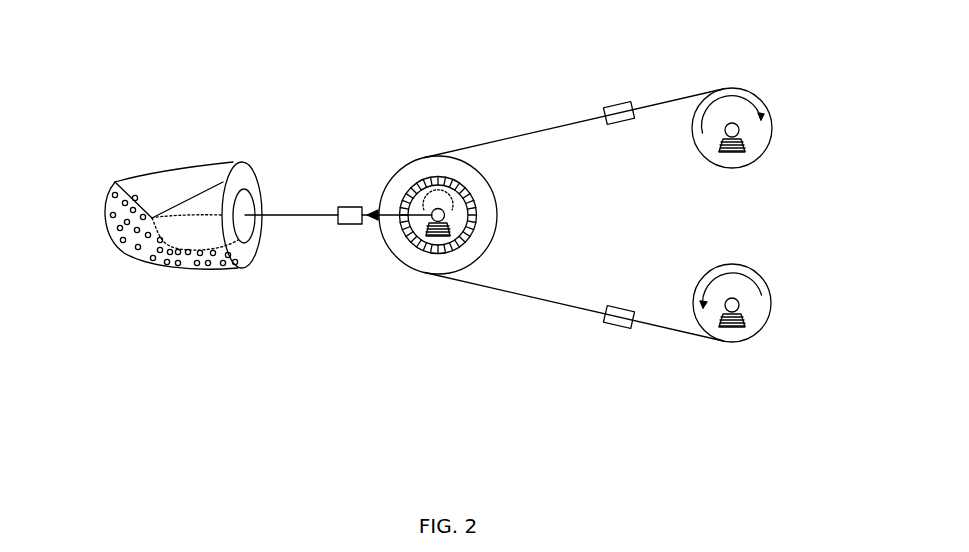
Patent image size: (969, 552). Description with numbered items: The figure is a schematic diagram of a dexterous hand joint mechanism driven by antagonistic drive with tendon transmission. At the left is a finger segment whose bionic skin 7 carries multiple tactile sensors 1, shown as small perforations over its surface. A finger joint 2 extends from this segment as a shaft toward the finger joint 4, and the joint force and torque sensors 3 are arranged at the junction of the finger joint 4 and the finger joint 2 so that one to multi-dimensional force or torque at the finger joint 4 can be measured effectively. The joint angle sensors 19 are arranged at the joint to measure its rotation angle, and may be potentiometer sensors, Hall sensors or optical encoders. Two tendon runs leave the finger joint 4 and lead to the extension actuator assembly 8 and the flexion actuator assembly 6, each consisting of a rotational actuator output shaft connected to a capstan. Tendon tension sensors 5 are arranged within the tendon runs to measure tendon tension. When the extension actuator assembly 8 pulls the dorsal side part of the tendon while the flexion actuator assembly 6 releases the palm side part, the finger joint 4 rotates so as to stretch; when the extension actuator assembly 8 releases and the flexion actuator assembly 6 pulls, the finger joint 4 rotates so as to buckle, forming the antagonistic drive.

The tactile sensors 1 is at (170, 268).
The finger joint 2 is at (289, 218).
The joint force and torque sensors 3 is at (348, 225).
The finger joint 4 is at (420, 258).
The tendon tension sensors 5 is at (615, 103).
The flexion actuator assembly 6 is at (752, 335).
The bionic skin 7 is at (235, 163).
The extension actuator assembly 8 is at (766, 101).
The joint angle sensors 19 is at (421, 173).